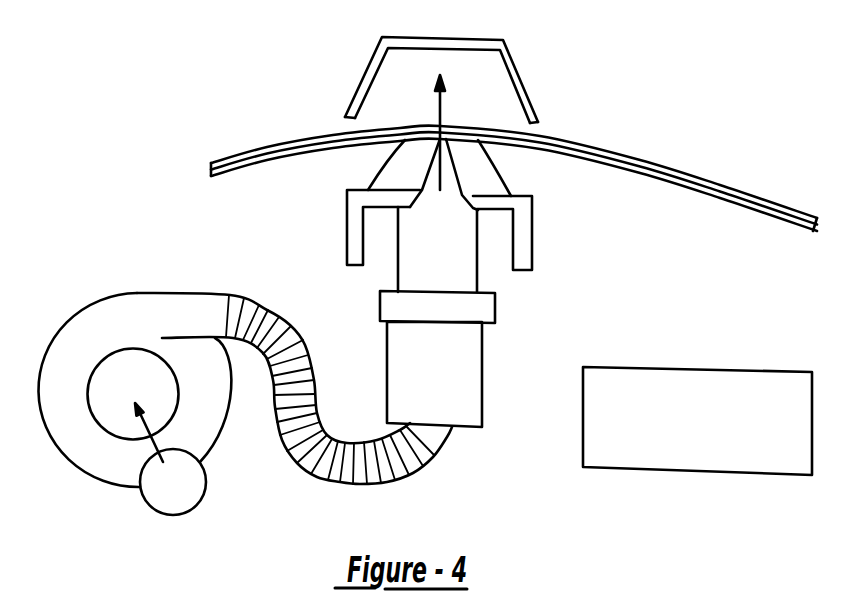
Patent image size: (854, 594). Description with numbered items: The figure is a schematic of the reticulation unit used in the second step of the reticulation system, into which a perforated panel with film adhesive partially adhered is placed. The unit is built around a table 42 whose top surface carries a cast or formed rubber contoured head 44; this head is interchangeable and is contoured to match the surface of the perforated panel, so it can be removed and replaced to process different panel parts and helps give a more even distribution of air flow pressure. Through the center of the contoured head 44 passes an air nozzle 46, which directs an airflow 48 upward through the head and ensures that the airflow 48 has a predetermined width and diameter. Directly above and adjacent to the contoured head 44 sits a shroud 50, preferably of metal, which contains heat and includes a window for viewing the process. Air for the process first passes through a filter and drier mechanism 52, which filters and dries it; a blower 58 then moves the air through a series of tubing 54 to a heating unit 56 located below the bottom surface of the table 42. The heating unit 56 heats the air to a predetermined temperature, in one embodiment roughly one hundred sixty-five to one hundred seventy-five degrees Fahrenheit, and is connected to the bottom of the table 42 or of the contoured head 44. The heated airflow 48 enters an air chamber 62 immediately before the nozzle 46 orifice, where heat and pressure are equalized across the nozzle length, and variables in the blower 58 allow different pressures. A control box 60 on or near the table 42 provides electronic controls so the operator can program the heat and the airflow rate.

The table 42 is at (523, 243).
The contoured head 44 is at (393, 166).
The air nozzle 46 is at (457, 170).
The airflow 48 is at (447, 102).
The shroud 50 is at (465, 40).
The filter and drier mechanism 52 is at (185, 490).
The tubing 54 is at (382, 470).
The heating unit 56 is at (453, 370).
The blower 58 is at (112, 322).
The control box 60 is at (710, 383).
The air chamber 62 is at (445, 235).